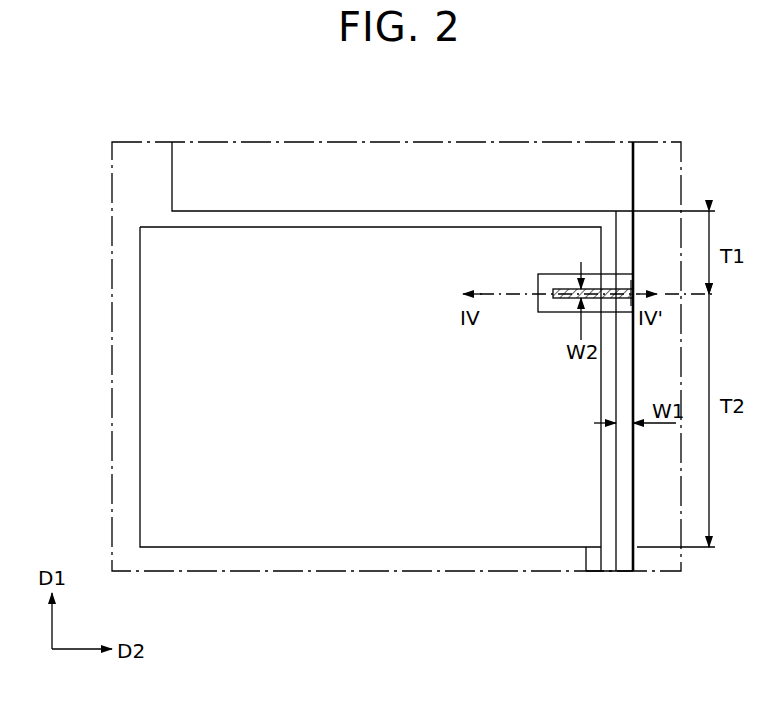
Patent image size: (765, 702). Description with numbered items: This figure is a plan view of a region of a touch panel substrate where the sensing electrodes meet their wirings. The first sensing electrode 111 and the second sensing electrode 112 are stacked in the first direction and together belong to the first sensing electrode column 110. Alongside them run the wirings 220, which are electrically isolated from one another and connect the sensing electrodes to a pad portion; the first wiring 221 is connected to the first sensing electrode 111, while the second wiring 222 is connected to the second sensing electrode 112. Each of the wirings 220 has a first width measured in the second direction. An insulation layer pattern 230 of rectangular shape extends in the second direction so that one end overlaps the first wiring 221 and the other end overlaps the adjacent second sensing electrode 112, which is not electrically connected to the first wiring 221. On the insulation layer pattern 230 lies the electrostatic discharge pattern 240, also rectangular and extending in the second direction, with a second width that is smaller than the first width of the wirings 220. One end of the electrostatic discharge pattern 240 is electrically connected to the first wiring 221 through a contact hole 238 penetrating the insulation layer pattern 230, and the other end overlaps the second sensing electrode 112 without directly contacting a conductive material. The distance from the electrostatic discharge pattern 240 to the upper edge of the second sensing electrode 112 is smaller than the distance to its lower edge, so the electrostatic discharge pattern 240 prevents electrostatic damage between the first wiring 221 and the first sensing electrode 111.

The first sensing electrode column 110 is at (50, 173).
The first sensing electrode 111 is at (185, 185).
The second sensing electrode 112 is at (150, 278).
The wirings 220 is at (651, 630).
The first wiring 221 is at (636, 572).
The second wiring 222 is at (597, 572).
The insulation layer pattern 230 is at (544, 282).
The contact hole 238 is at (628, 286).
The electrostatic discharge pattern 240 is at (562, 297).